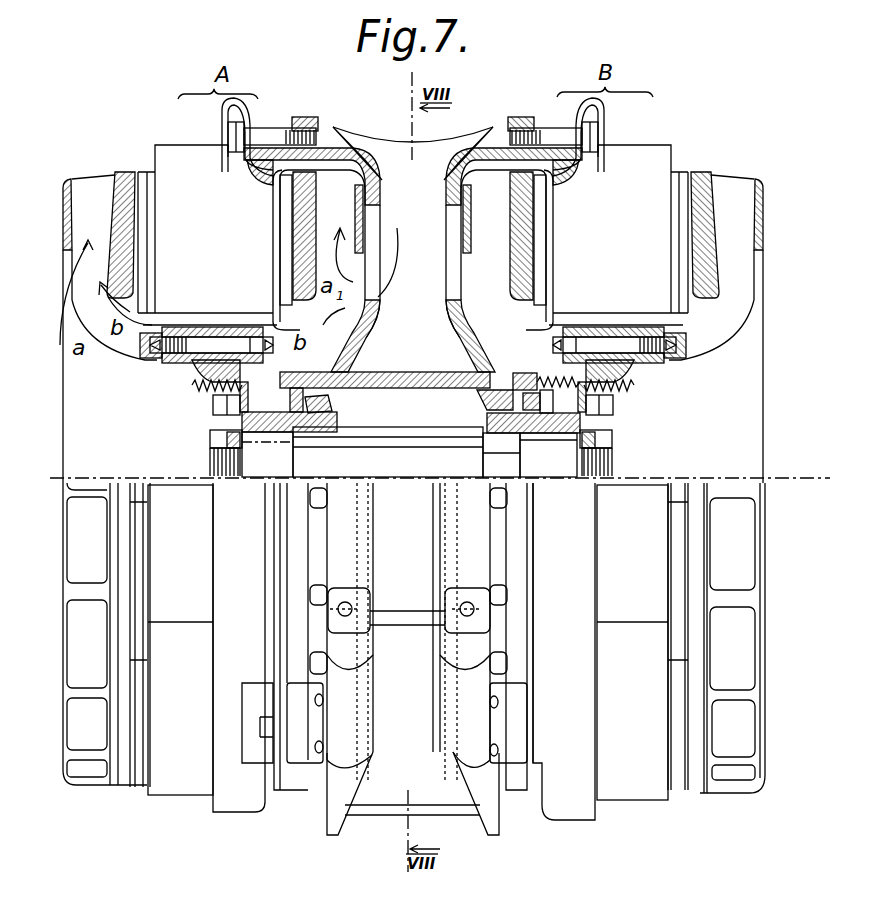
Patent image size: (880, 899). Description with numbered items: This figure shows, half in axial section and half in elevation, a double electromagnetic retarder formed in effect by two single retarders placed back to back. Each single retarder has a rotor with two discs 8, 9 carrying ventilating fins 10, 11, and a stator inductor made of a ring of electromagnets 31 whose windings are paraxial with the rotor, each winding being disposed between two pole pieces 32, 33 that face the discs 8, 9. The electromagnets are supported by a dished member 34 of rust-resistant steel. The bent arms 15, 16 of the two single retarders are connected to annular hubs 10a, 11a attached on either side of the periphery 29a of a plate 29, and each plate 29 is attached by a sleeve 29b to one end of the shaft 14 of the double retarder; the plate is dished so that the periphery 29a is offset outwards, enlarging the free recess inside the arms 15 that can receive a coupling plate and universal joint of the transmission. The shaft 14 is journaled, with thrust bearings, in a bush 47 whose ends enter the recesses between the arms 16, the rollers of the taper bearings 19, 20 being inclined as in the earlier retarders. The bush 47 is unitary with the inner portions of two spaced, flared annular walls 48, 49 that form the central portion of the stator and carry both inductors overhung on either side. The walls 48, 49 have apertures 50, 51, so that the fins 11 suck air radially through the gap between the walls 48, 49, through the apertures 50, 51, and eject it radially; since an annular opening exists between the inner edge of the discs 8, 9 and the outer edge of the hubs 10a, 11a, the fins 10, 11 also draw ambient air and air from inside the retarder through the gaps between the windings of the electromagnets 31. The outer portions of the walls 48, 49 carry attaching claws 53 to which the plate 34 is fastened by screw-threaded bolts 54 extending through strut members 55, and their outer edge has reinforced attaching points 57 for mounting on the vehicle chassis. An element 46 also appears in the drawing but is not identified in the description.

The rotor disc 8 is at (120, 173).
The rotor disc 9 is at (300, 250).
The ventilating fins 10 is at (95, 208).
The annular hub 10a is at (193, 362).
The ventilating fins 11 is at (327, 222).
The annular hub 11a is at (233, 330).
The shaft 14 is at (413, 437).
The bent arms 15 is at (130, 353).
The bent arms 16 is at (350, 335).
The taper bearing 19 is at (337, 403).
The taper bearing 20 is at (490, 413).
The plate 29 is at (225, 407).
The periphery of plate 29a is at (210, 330).
The sleeve 29b is at (248, 430).
The electromagnets 31 is at (203, 157).
The pole piece 32 is at (143, 170).
The pole piece 33 is at (283, 195).
The dished member 34 is at (250, 118).
The spring 46 is at (192, 385).
The bush 47 is at (407, 376).
The annular wall 48 is at (380, 188).
The annular wall 49 is at (450, 180).
The aperture 50 is at (376, 284).
The aperture 51 is at (446, 283).
The attaching claws 53 is at (310, 122).
The screw-threaded bolts 54 is at (247, 162).
The strut members 55 is at (280, 124).
The reinforced attaching point 57 is at (345, 597).